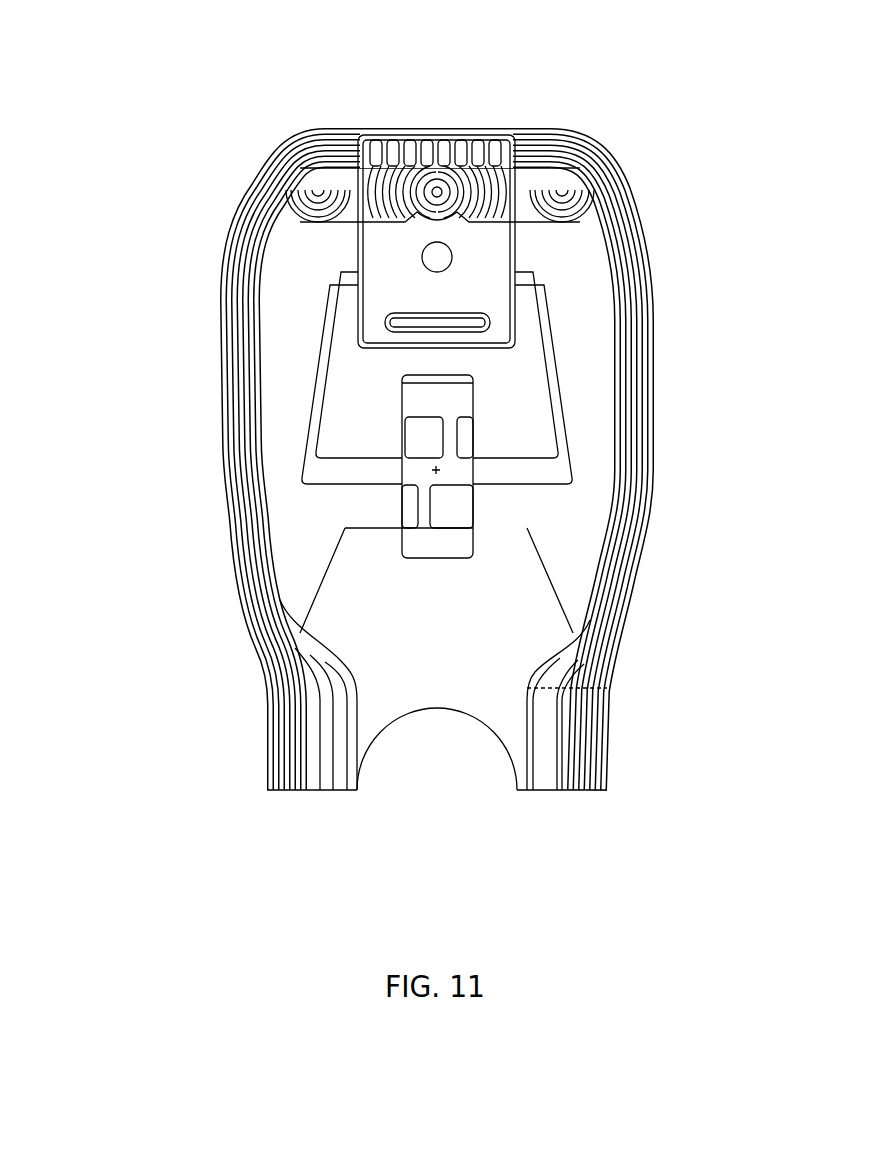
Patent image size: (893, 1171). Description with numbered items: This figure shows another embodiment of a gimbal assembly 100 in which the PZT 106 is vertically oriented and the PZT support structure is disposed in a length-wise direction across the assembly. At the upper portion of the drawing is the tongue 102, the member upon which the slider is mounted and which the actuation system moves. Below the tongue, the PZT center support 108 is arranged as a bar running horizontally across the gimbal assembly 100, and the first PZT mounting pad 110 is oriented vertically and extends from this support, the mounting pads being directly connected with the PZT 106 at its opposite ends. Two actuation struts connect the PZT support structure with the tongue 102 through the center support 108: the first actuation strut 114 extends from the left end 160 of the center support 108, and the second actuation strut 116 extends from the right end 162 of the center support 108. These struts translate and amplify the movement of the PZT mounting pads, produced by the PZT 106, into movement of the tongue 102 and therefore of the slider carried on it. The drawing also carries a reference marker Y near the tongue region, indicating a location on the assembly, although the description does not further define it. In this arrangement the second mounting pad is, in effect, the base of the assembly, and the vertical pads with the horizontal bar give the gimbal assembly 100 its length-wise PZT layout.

The gimbal assembly 100 is at (402, 54).
The reference point Y is at (425, 256).
The tongue 102 is at (477, 267).
The first PZT mounting pad 110 is at (436, 404).
The first actuation strut 114 is at (316, 402).
The second actuation strut 116 is at (559, 372).
The center support 108 is at (462, 470).
The left end of the center support 160 is at (315, 463).
The PZT 106 is at (385, 538).
The right end of the center support 162 is at (557, 470).